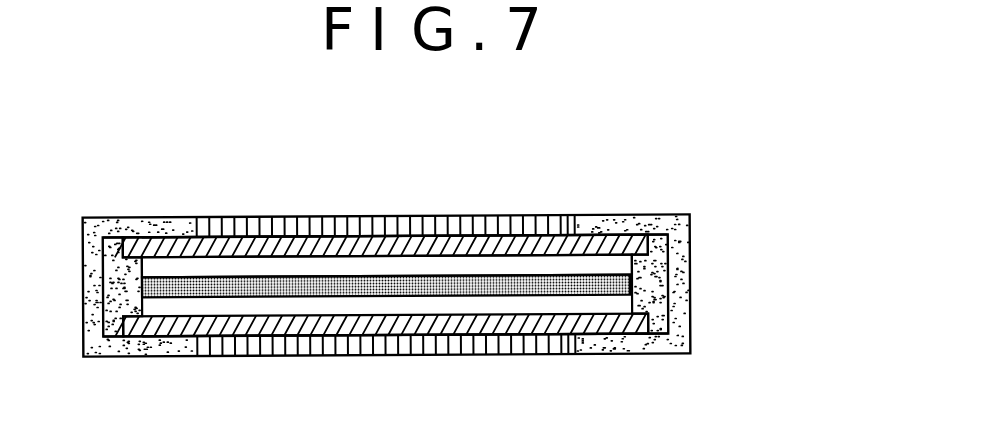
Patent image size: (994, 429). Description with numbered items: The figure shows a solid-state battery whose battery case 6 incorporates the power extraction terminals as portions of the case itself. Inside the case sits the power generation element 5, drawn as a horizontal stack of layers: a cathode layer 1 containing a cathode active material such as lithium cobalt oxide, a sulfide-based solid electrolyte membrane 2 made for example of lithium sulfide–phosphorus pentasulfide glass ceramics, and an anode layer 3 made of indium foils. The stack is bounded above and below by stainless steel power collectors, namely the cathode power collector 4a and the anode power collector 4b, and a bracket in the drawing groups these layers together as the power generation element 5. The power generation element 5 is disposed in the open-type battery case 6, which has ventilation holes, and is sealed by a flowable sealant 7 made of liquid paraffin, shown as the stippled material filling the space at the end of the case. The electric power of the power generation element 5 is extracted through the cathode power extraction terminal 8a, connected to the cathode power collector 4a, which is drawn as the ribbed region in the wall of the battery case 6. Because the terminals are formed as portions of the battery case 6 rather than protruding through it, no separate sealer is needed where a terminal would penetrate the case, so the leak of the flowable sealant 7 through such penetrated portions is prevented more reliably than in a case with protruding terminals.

The cathode layer 1 is at (612, 265).
The sulfide-based solid electrolyte membrane 2 is at (633, 281).
The anode layer 3 is at (633, 300).
The cathode power collector 4a is at (645, 240).
The anode power collector 4b is at (645, 317).
The power generation element 5 is at (822, 218).
The battery case 6 is at (640, 222).
The flowable sealant 7 is at (105, 240).
The cathode power extraction terminal 8a is at (385, 230).